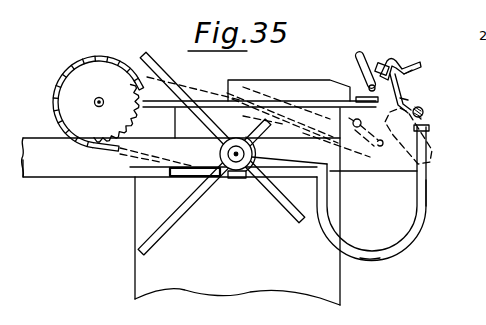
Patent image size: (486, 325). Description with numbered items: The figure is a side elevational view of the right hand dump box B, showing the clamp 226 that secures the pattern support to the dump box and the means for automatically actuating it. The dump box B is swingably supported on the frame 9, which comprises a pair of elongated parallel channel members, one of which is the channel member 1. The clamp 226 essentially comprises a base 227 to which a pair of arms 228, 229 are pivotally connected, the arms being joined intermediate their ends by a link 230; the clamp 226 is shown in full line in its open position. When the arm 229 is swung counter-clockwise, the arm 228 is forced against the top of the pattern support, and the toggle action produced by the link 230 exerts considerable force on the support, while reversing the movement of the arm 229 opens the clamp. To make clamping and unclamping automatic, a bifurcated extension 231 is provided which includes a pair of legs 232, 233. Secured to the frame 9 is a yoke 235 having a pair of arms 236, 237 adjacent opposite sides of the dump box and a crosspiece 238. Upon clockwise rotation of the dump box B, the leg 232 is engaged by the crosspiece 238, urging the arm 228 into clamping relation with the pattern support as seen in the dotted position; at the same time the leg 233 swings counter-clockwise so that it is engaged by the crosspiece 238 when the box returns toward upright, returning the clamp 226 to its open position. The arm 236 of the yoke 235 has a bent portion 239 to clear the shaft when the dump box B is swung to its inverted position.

The channel member 1 is at (81, 173).
The frame 9 is at (33, 181).
The dump box B is at (128, 216).
The clamp 226 is at (356, 73).
The base 227 is at (401, 88).
The arm 228 is at (361, 49).
The arm 229 is at (396, 60).
The link 230 is at (382, 64).
The bifurcated extension 231 is at (444, 108).
The leg 232 is at (412, 70).
The leg 233 is at (440, 96).
The yoke 235 is at (420, 251).
The arm 236 is at (426, 199).
The arm 237 is at (355, 173).
The crosspiece 238 is at (423, 116).
The bent portion 239 is at (376, 258).